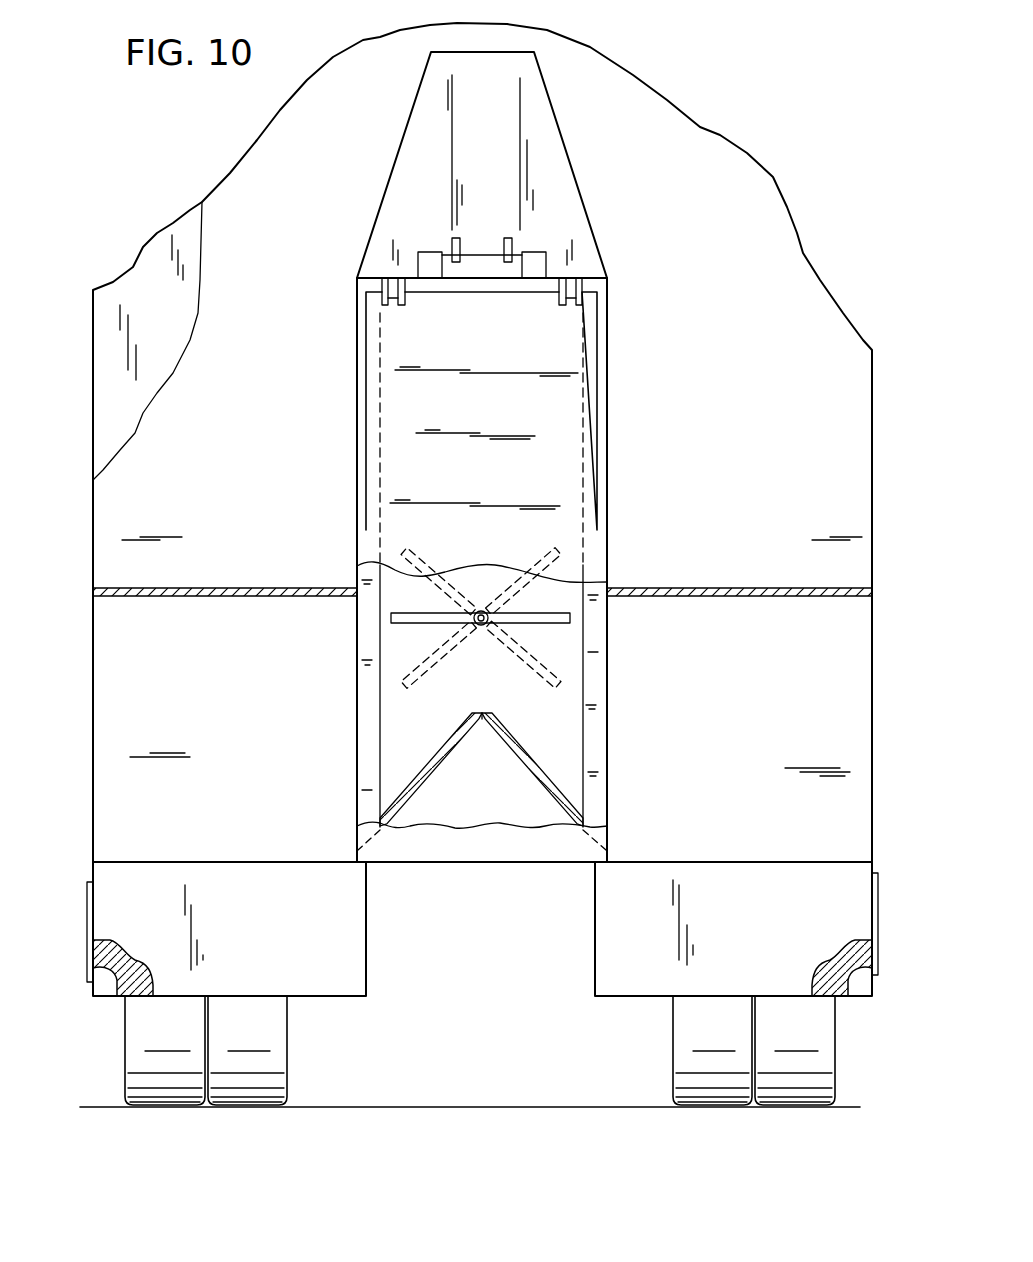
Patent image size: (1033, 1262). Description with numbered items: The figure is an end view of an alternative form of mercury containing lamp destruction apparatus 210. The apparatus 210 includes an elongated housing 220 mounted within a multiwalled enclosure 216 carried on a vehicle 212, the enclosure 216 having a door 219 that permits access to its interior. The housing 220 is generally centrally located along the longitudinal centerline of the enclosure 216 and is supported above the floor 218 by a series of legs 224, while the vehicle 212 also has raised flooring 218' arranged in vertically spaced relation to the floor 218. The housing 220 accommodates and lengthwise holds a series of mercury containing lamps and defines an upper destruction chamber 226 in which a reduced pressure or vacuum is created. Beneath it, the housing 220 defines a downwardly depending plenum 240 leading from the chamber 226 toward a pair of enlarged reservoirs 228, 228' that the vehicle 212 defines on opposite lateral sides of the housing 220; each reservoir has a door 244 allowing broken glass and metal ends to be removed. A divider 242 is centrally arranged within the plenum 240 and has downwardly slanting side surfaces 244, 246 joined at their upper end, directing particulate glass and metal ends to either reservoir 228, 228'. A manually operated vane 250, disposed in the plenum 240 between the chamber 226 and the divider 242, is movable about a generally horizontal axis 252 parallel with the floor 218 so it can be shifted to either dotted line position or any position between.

The mercury containing lamp destruction apparatus 210 is at (640, 418).
The vehicle 212 is at (86, 800).
The multiwalled enclosure 216 is at (874, 386).
The floor 218 is at (476, 964).
The raised flooring 218' is at (482, 557).
The door 219 is at (170, 330).
The housing 220 is at (338, 414).
The legs 224 is at (600, 668).
The upper chamber 226 is at (582, 416).
The reservoir 228 is at (853, 996).
The reservoir 228' is at (99, 996).
The plenum 240 is at (395, 572).
The divider 242 is at (560, 763).
The door 244 is at (560, 796).
The downwardly slanting side surface 246 is at (420, 767).
The vane 250 is at (408, 631).
The horizontal axis 252 is at (492, 621).